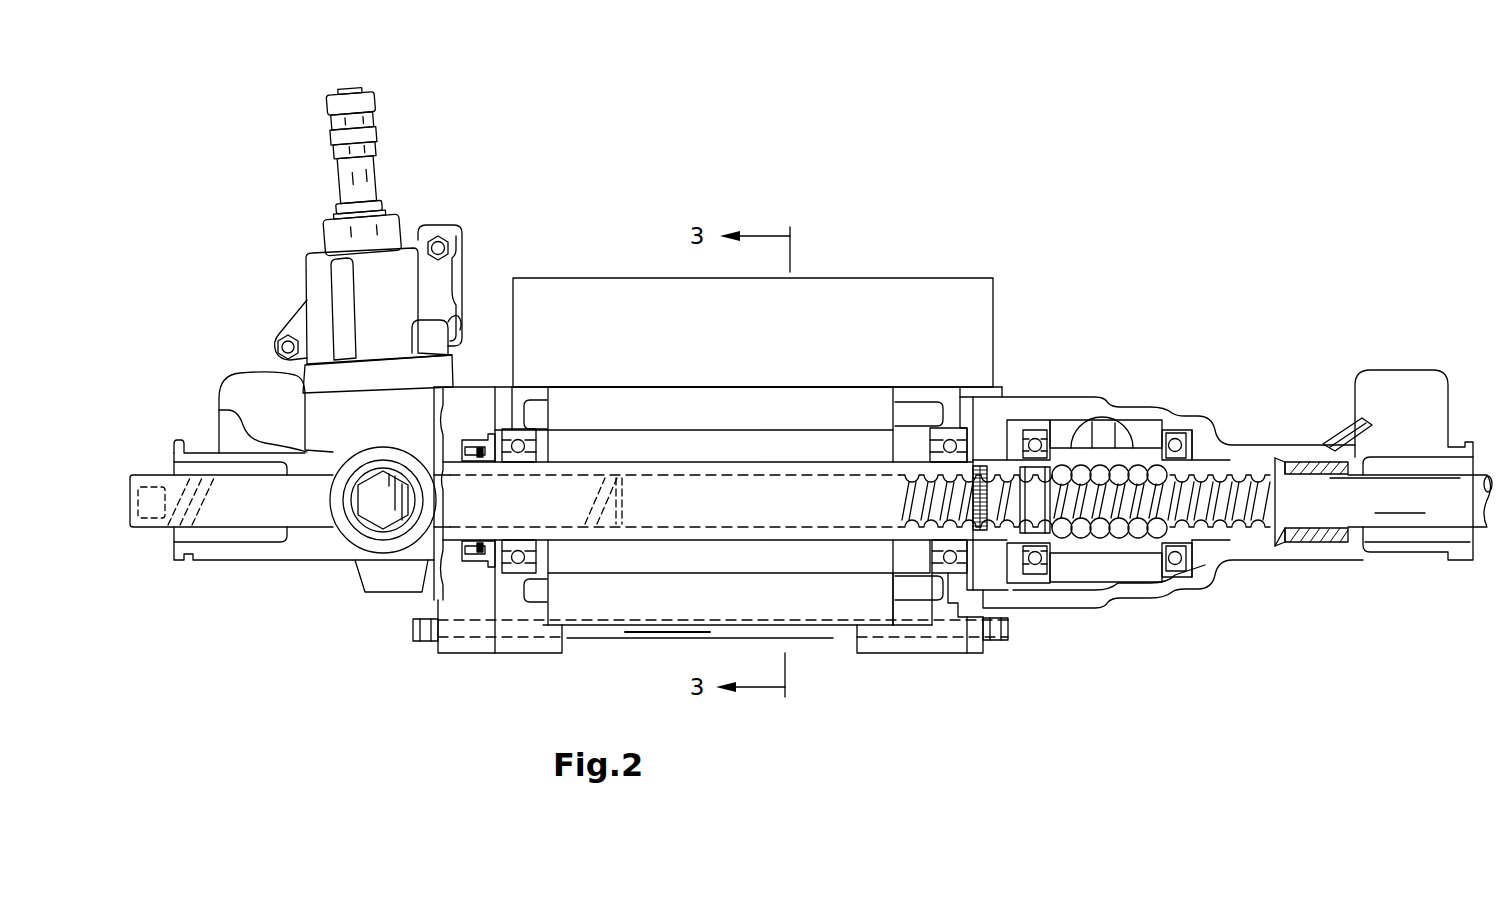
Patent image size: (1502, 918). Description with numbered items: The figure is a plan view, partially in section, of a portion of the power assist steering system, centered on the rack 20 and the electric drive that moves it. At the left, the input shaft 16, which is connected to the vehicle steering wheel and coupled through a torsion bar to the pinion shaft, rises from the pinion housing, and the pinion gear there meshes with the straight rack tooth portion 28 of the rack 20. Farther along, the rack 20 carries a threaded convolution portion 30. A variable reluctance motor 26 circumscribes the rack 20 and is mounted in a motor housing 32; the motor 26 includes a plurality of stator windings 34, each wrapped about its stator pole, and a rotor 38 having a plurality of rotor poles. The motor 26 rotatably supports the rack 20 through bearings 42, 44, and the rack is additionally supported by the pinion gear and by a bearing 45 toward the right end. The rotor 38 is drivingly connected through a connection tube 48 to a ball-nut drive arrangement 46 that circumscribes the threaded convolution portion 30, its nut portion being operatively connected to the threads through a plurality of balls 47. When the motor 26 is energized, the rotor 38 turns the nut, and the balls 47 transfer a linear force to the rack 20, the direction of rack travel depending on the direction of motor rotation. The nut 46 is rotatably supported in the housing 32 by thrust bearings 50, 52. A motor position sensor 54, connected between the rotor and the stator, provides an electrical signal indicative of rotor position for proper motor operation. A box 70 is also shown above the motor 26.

The input shaft 16 is at (366, 185).
The rack 20 is at (1360, 497).
The variable reluctance motor 26 is at (851, 384).
The straight rack tooth portion 28 is at (233, 517).
The threaded convolution portion 30 is at (1235, 468).
The motor housing 32 is at (836, 646).
The stator windings 34 is at (910, 600).
The rotor 38 is at (628, 565).
The bearing 42 is at (518, 429).
The bearing 44 is at (991, 450).
The bearing 45 is at (1315, 542).
The ball-nut drive arrangement 46 is at (1130, 550).
The balls 47 is at (1102, 468).
The connection tube 48 is at (1031, 430).
The thrust bearing 50 is at (1050, 440).
The thrust bearing 52 is at (1200, 567).
The motor position sensor 54 is at (452, 585).
The controller 70 is at (910, 278).